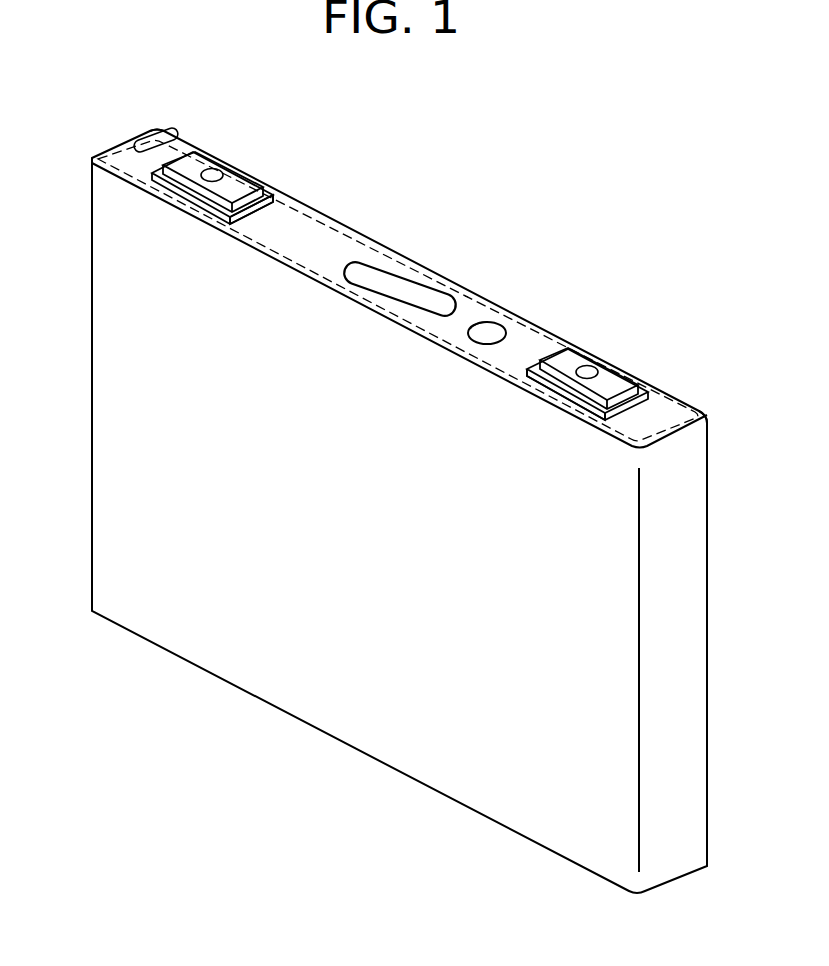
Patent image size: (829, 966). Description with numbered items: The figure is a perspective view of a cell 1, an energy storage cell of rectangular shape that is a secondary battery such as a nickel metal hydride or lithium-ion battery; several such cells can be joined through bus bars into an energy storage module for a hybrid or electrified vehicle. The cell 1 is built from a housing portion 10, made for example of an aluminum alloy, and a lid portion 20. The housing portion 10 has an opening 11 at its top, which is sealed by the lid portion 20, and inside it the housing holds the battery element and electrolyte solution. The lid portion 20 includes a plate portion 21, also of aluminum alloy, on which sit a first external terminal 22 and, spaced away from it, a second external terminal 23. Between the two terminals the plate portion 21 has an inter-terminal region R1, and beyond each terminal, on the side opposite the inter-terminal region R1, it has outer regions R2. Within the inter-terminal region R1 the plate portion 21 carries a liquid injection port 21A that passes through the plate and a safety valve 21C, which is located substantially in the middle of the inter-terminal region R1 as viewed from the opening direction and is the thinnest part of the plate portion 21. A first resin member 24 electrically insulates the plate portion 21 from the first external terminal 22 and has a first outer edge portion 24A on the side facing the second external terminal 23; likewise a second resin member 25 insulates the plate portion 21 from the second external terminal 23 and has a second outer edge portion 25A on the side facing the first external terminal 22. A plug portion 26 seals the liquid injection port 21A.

The cell 1 is at (650, 213).
The housing portion 10 is at (108, 451).
The opening 11 is at (167, 139).
The lid portion 20 is at (322, 224).
The plate portion 21 is at (347, 243).
The liquid injection port 21A is at (483, 332).
The safety valve 21C is at (412, 296).
The first external terminal 22 is at (233, 185).
The second external terminal 23 is at (608, 380).
The first resin member 24 is at (263, 188).
The first outer edge portion 24A is at (273, 207).
The second resin member 25 is at (637, 387).
The second outer edge portion 25A is at (540, 362).
The plug portion 26 is at (487, 335).
The inter-terminal region R1 is at (463, 297).
The outer regions R2 is at (115, 162).